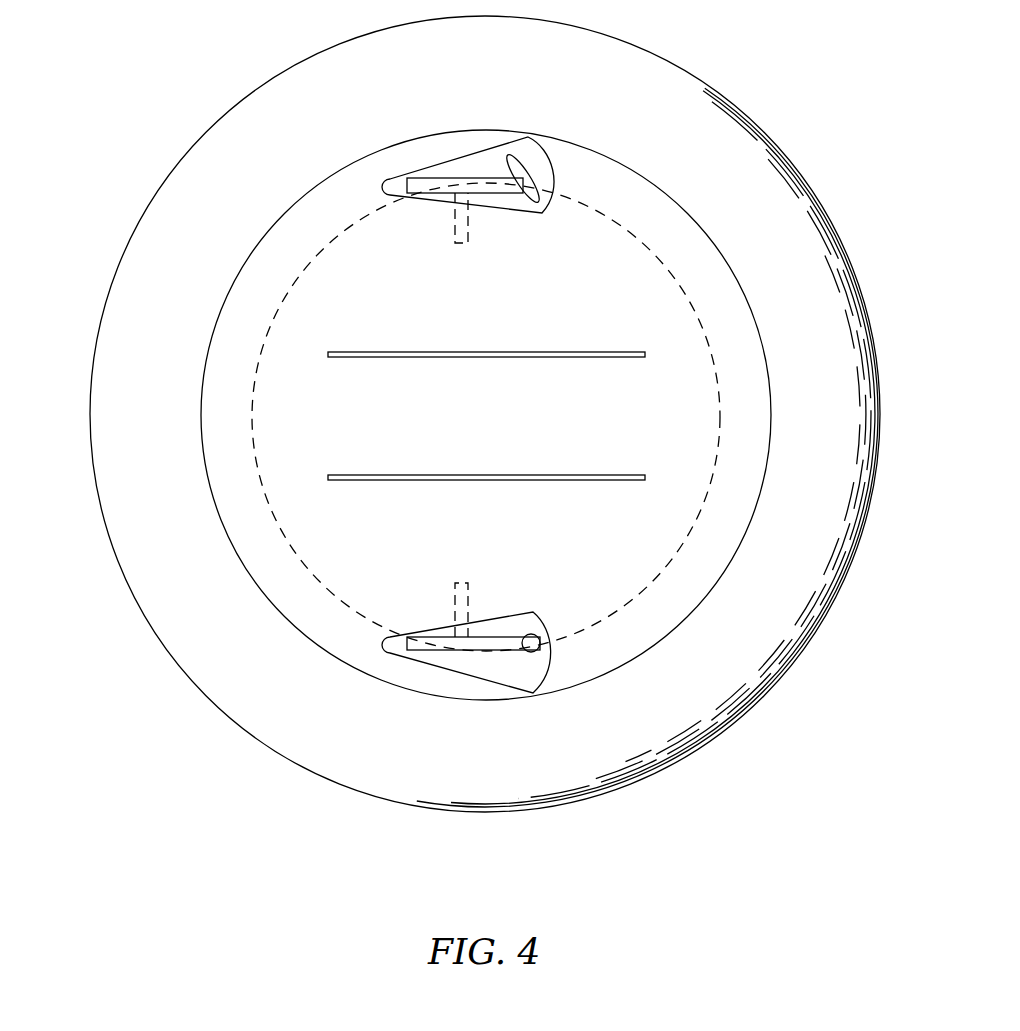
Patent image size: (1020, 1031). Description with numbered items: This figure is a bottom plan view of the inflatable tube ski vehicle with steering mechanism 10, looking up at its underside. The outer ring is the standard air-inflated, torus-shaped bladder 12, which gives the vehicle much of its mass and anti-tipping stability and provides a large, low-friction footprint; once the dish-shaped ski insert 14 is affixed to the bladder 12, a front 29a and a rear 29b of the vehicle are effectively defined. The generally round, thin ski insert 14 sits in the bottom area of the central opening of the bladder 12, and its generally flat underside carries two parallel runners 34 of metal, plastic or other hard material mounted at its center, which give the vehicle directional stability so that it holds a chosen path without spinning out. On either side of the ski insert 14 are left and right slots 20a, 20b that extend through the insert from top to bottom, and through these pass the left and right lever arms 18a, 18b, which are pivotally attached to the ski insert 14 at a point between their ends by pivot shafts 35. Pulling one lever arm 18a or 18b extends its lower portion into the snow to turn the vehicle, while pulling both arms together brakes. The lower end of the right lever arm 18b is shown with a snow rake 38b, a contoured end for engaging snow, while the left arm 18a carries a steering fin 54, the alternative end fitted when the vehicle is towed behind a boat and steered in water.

The inflatable tube ski vehicle with steering mechanism 10 is at (275, 833).
The bladder 12 is at (196, 664).
The dish-shaped ski insert 14 is at (755, 374).
The left lever arm 18a is at (445, 183).
The right lever arm 18b is at (445, 648).
The left side slot 20a is at (531, 150).
The right side slot 20b is at (530, 677).
The front 29a is at (133, 574).
The rear 29b is at (862, 344).
The runners 34 is at (507, 358).
The pivot shafts 35 is at (470, 237).
The snow rake 38b is at (532, 641).
The steering fins 54 is at (525, 178).